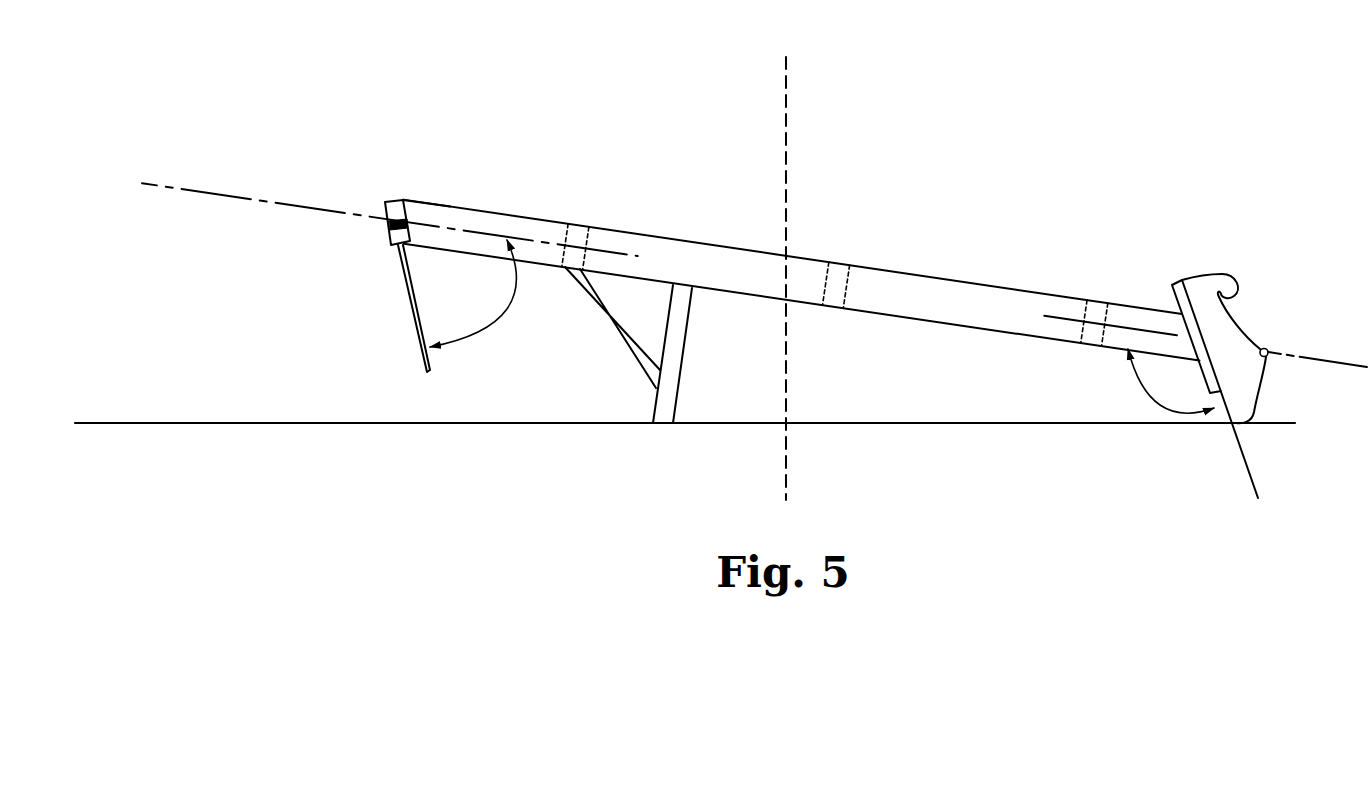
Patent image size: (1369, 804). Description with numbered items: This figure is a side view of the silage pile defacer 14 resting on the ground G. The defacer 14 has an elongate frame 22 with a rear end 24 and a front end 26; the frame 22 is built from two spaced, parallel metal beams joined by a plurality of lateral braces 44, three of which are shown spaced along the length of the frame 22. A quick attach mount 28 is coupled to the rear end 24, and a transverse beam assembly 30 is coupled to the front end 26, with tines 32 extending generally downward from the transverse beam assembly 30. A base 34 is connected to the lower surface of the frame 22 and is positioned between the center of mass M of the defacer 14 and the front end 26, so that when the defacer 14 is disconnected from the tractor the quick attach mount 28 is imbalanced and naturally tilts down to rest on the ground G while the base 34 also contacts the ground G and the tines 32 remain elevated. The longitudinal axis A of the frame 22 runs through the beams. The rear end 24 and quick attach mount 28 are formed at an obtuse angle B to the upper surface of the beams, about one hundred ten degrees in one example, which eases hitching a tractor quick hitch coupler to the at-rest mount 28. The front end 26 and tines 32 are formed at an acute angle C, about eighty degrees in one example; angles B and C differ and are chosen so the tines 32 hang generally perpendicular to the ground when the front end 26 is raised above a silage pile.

The silage pile defacer 14 is at (1080, 193).
The frame 22 is at (935, 277).
The rear end 24 is at (1177, 316).
The front end 26 is at (403, 203).
The quick attach mount 28 is at (1215, 270).
The transverse beam assembly 30 is at (390, 198).
The tines 32 is at (402, 283).
The base 34 is at (673, 330).
The lateral braces 44 is at (578, 237).
The longitudinal axis A is at (244, 198).
The angle B is at (1133, 378).
The angle C is at (485, 313).
The ground G is at (161, 422).
The center of mass M is at (785, 279).